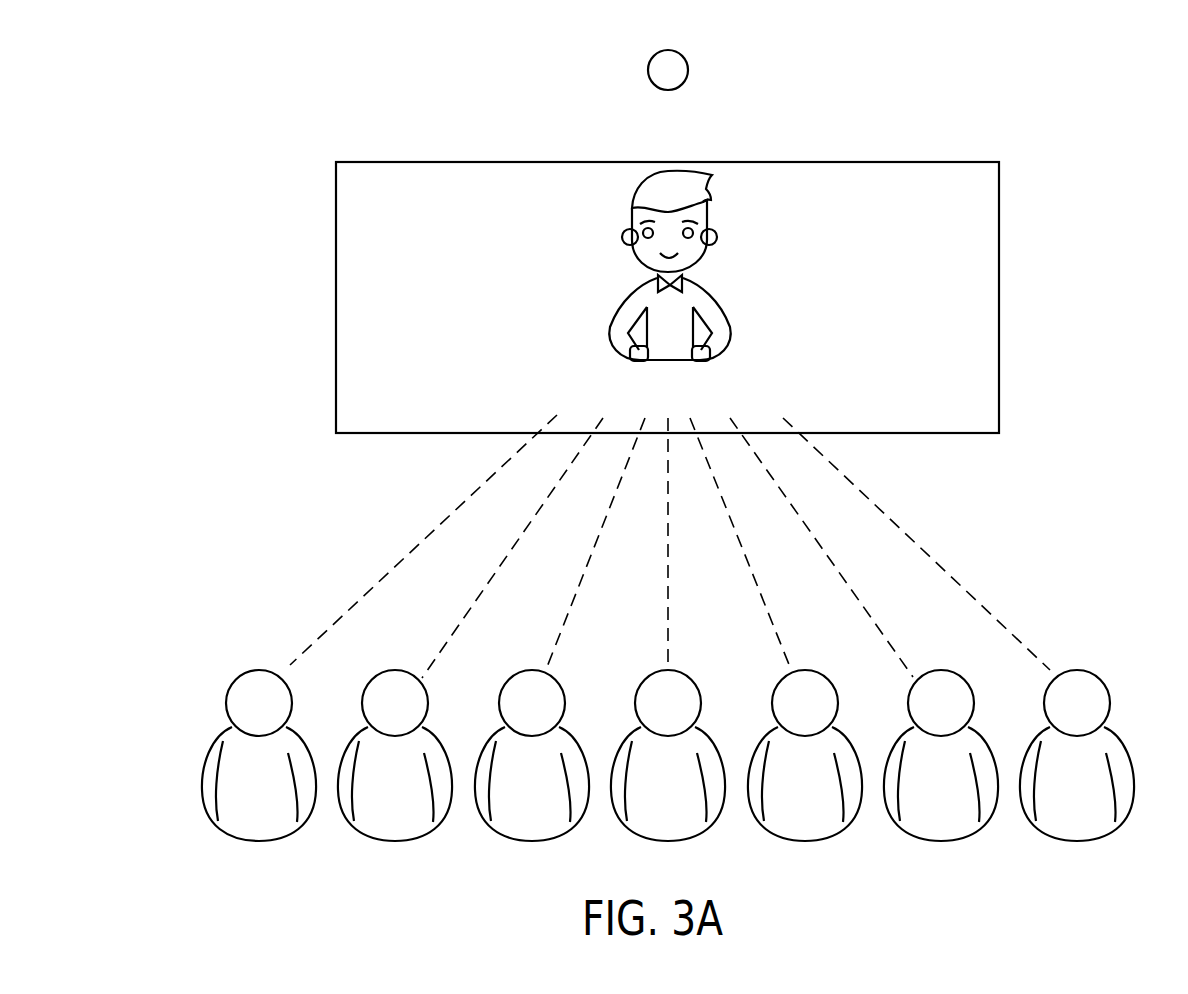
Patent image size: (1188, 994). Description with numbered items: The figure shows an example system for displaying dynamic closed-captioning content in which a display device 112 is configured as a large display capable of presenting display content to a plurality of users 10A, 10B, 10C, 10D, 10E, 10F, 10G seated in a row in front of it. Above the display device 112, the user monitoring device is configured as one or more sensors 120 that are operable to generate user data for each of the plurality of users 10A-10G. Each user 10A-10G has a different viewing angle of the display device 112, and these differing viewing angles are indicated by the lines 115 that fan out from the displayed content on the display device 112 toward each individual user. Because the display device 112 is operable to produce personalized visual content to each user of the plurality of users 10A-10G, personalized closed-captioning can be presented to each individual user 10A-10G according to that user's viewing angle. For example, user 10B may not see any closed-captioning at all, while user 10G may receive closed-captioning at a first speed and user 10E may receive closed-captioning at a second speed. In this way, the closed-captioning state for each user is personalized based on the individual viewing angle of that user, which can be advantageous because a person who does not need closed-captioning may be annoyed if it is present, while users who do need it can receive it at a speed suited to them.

The user 10A is at (250, 850).
The user 10B is at (393, 852).
The user 10C is at (535, 852).
The user 10D is at (667, 852).
The user 10E is at (802, 852).
The user 10F is at (943, 852).
The user 10G is at (1087, 850).
The display device 112 is at (310, 256).
The lines 115 is at (368, 575).
The sensors 120 is at (699, 65).